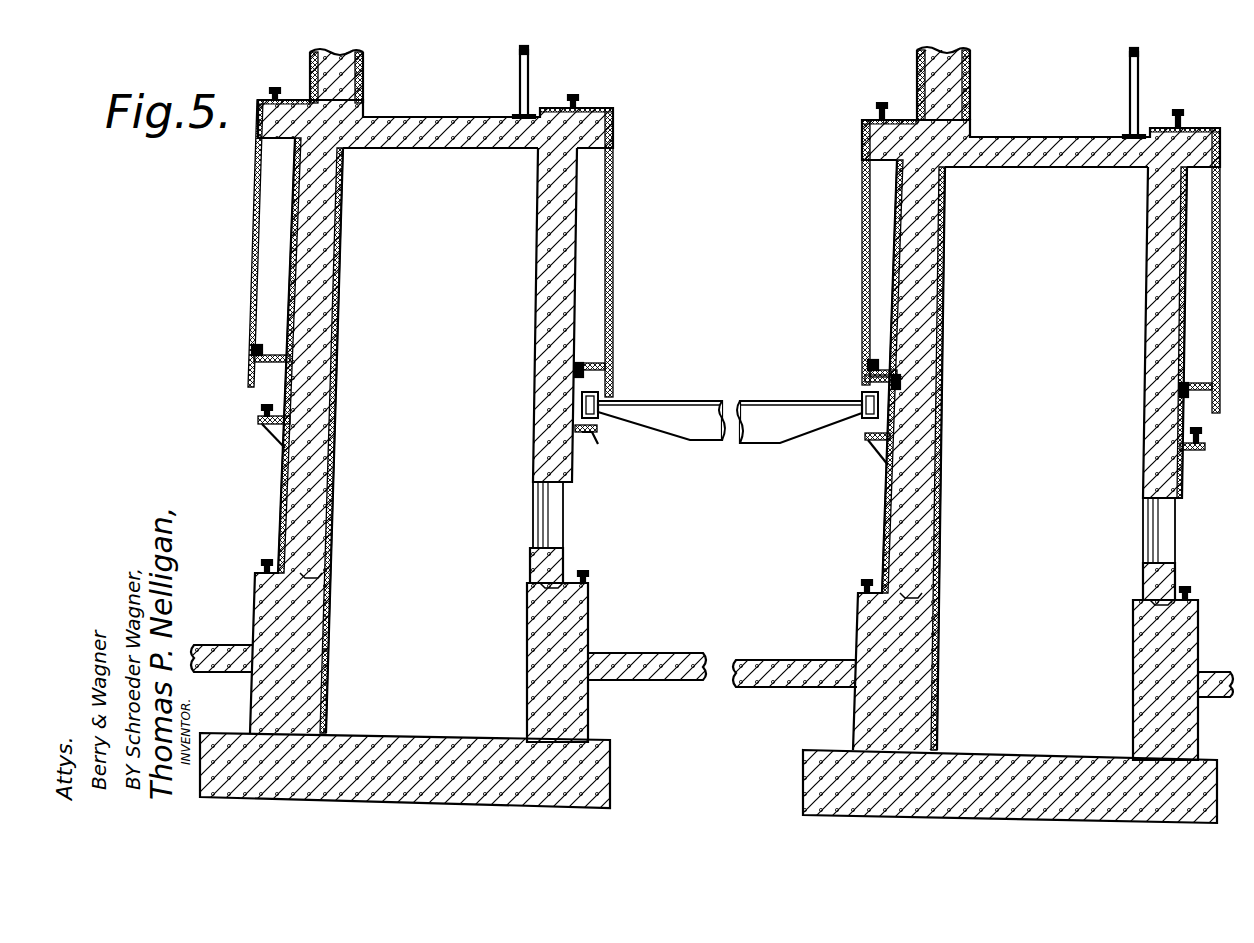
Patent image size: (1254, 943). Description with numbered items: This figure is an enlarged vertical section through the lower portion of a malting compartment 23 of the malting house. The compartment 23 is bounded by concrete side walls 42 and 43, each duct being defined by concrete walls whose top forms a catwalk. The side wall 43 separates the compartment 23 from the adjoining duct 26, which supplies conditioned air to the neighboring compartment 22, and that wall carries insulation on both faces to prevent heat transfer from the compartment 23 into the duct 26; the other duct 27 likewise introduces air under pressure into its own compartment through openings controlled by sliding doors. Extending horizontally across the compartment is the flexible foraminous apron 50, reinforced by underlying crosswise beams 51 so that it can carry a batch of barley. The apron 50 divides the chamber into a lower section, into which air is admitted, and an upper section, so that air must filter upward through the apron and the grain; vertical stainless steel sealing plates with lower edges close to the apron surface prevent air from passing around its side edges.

The compartment 22 is at (1200, 483).
The compartment 23 is at (710, 209).
The duct 26 is at (1045, 439).
The duct 27 is at (410, 389).
The side wall 42 is at (540, 247).
The side wall 43 is at (945, 272).
The flexible foraminous apron 50 is at (700, 398).
The underlying beam 51 is at (788, 430).